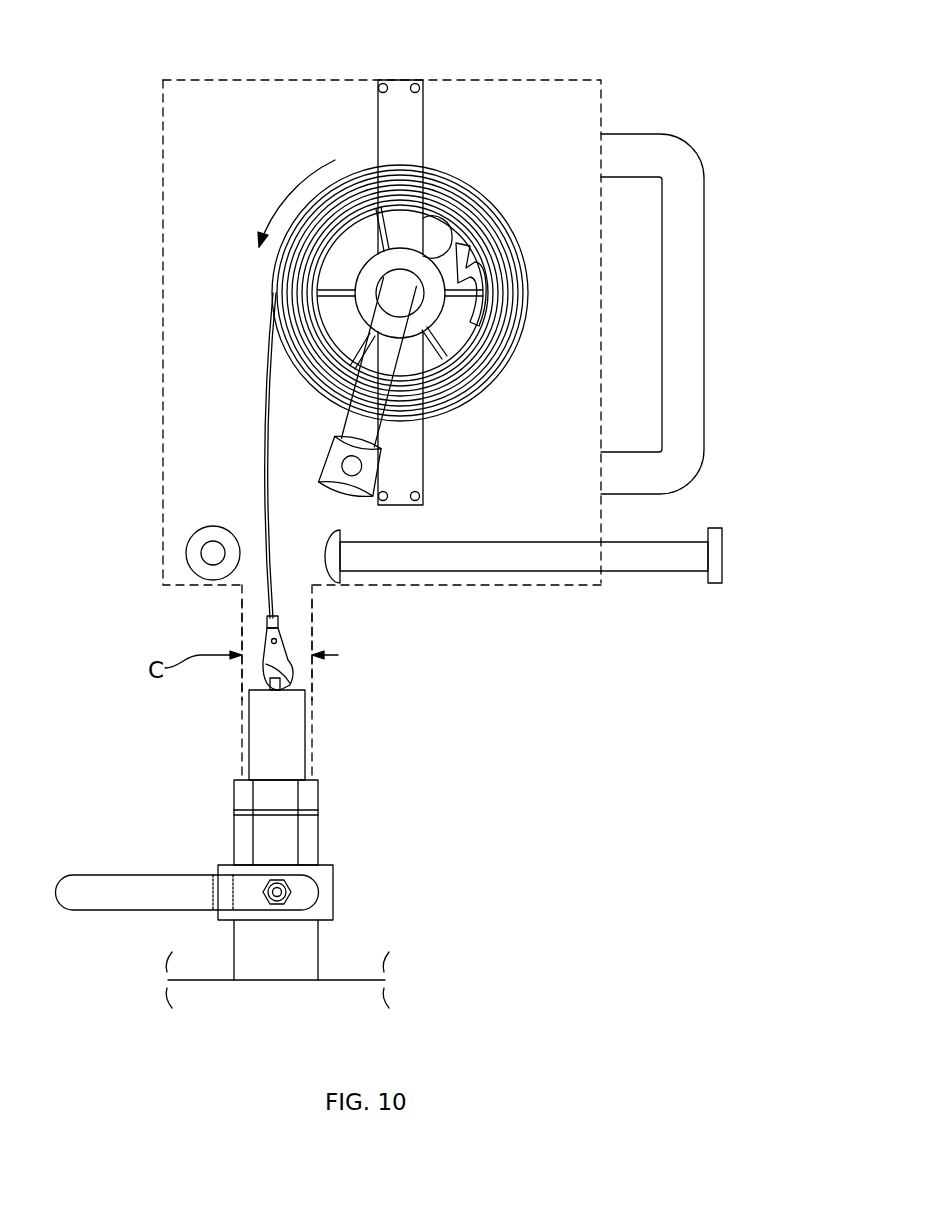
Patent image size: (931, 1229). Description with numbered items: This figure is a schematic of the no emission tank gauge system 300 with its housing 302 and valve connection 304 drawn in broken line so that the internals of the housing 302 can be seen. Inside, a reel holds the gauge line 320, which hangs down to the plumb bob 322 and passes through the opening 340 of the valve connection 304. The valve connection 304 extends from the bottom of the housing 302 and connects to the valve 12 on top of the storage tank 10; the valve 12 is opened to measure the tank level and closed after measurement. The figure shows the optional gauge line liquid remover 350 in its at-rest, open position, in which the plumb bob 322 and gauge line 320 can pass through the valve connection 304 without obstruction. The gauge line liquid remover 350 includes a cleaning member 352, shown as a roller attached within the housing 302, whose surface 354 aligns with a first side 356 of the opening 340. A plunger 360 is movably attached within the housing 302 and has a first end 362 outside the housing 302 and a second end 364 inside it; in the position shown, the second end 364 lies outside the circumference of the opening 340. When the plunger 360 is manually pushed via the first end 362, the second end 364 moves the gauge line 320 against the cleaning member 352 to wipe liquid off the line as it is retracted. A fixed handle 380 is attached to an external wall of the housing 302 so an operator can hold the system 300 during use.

The no emission tank gauge system 300 is at (128, 118).
The housing 302 is at (537, 100).
The gauge line 320 is at (265, 380).
The plumb bob 322 is at (268, 732).
The opening 340 is at (287, 587).
The gauge line liquid remover 350 is at (444, 585).
The cleaning member 352 is at (200, 540).
The surface 354 is at (228, 565).
The first side 356 is at (240, 618).
The plunger 360 is at (528, 560).
The first end 362 is at (695, 545).
The second end 364 is at (360, 550).
The fixed handle 380 is at (690, 298).
The valve connection 304 is at (318, 697).
The valve 12 is at (330, 893).
The storage tank 10 is at (342, 982).